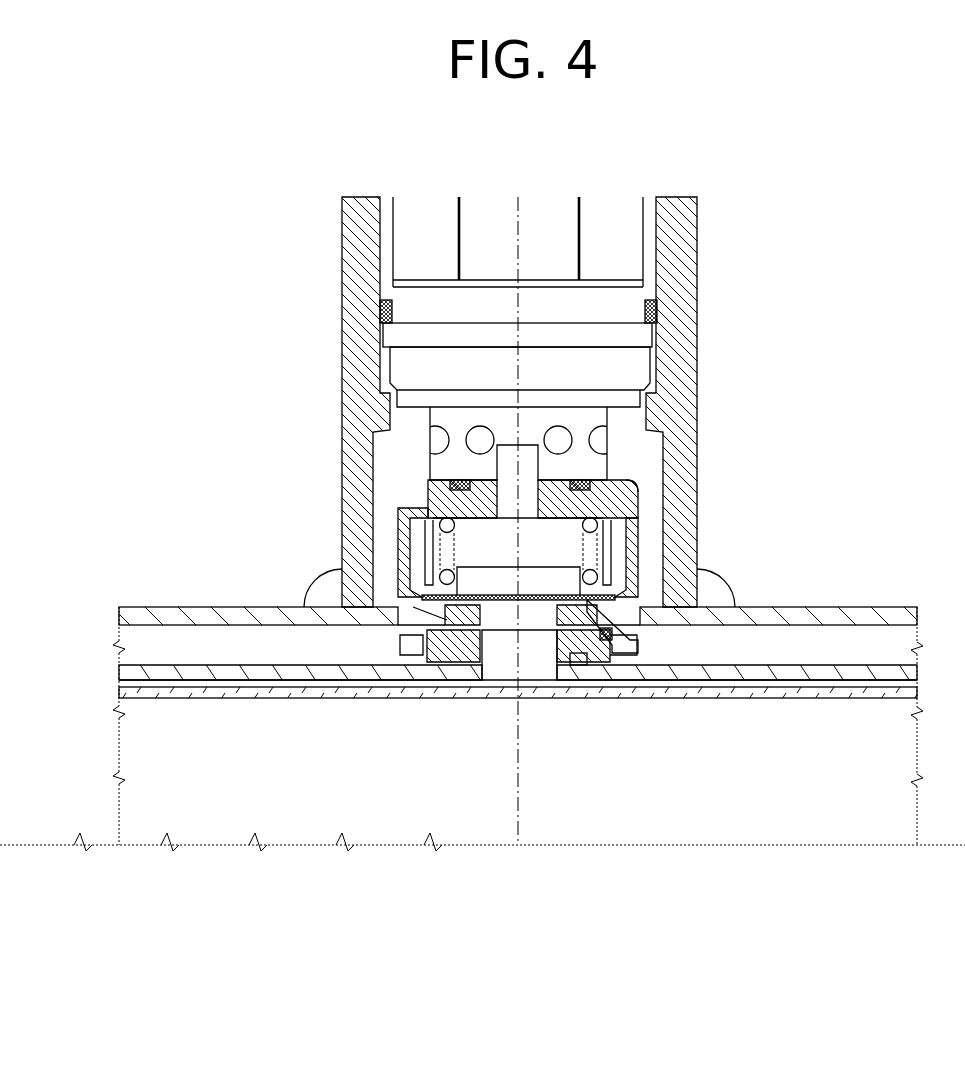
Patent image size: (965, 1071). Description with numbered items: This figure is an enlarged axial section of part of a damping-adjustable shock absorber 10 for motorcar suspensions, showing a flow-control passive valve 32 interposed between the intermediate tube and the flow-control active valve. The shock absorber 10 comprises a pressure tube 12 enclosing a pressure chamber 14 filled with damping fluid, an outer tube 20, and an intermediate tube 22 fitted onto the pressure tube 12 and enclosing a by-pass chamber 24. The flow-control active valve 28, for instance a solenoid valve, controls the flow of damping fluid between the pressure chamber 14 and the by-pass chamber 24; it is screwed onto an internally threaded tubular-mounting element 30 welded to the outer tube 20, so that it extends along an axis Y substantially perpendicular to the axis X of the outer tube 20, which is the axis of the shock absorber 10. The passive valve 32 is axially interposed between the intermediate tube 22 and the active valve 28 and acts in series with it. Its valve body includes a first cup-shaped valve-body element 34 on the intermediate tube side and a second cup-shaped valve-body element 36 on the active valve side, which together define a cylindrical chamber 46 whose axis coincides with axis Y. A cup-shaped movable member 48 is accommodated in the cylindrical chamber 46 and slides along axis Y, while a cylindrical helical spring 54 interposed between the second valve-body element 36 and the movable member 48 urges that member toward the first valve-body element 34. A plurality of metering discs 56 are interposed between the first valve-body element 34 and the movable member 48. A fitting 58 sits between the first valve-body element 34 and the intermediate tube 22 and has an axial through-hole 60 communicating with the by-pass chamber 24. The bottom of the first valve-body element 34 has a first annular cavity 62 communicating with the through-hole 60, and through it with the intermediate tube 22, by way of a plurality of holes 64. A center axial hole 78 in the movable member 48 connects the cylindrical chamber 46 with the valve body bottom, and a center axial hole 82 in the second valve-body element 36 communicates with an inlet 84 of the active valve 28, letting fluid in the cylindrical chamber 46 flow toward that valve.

The damping-adjustable shock absorber 10 is at (138, 538).
The pressure tube 12 is at (887, 688).
The pressure chamber 14 is at (815, 715).
The outer tube 20 is at (886, 607).
The intermediate tube 22 is at (215, 670).
The by-pass chamber 24 is at (318, 700).
The flow-control active valve 28 is at (655, 292).
The tubular-mounting element 30 is at (697, 390).
The flow-control passive valve 32 is at (640, 490).
The first cup-shaped valve-body element 34 is at (640, 645).
The second cup-shaped valve-body element 36 is at (625, 548).
The cylindrical chamber 46 is at (473, 523).
The cup-shaped movable member 48 is at (430, 565).
The cylindrical helical spring 54 is at (652, 505).
The metering discs 56 is at (495, 600).
The fitting 58 is at (578, 613).
The axial through-hole 60 is at (548, 645).
The first annular cavity 62 is at (458, 600).
The holes 64 is at (625, 650).
The center axial hole 78 is at (492, 590).
The center axial hole 82 is at (500, 480).
The inlet 84 is at (513, 475).
The axis of the shock absorber X is at (722, 848).
The axis of the active valve Y is at (520, 245).